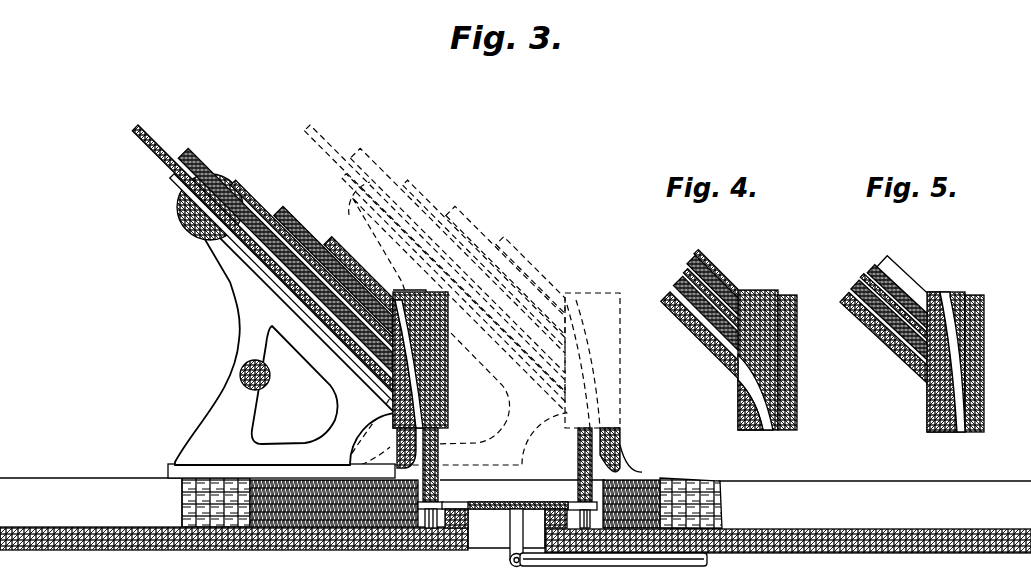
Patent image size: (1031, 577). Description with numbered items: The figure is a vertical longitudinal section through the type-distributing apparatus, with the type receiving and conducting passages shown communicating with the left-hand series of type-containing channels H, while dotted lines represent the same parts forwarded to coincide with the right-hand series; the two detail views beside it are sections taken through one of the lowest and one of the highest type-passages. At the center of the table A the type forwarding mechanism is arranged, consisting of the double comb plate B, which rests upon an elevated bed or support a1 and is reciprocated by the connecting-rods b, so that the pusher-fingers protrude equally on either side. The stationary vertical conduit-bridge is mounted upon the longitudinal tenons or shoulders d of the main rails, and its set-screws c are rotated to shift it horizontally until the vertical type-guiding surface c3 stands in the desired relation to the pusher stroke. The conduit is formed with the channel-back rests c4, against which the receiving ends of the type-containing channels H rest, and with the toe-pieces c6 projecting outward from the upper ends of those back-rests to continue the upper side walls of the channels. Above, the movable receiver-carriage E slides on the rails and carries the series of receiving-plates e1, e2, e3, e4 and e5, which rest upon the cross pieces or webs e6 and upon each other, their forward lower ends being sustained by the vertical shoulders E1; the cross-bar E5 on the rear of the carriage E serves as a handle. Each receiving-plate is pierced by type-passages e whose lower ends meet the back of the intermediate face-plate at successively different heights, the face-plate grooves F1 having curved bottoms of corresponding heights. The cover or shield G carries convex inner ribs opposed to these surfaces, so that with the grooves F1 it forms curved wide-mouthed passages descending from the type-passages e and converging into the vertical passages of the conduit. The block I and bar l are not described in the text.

In FIG. 3, the type-passages e is at (325, 337).
In FIG. 5, the type-passages e is at (883, 338).
In FIG. 3, the first or lower receiving-plate e1 is at (262, 253).
In FIG. 4, the first or lower receiving-plate e1 is at (699, 340).
In FIG. 3, the second receiving-plate e2 is at (285, 258).
In FIG. 4, the second receiving-plate e2 is at (675, 286).
In FIG. 5, the second receiving-plate e2 is at (855, 286).
In FIG. 3, the receiving-plate e3 is at (312, 262).
In FIG. 4, the receiving-plate e3 is at (684, 277).
In FIG. 5, the receiving-plate e3 is at (863, 276).
In FIG. 3, the receiving-plate e4 is at (333, 269).
In FIG. 4, the receiving-plate e4 is at (693, 262).
In FIG. 5, the receiving-plate e4 is at (877, 265).
In FIG. 3, the receiving-plate e5 is at (358, 271).
In FIG. 4, the receiving-plate e5 is at (716, 274).
In FIG. 5, the receiving-plate e5 is at (902, 285).
In FIG. 3, the cross pieces or webs e6 is at (208, 226).
In FIG. 3, the receiver-carriage E is at (281, 337).
In FIG. 3, the vertical shoulders E1 is at (399, 285).
In FIG. 3, the cross-bar E5 is at (240, 376).
In FIG. 3, the cover or shield G is at (424, 359).
In FIG. 4, the cover or shield G is at (775, 360).
In FIG. 5, the cover or shield G is at (963, 362).
In FIG. 3, the grooves of the face-plate F1 is at (408, 384).
In FIG. 4, the grooves of the face-plate F1 is at (755, 392).
In FIG. 5, the grooves of the face-plate F1 is at (946, 362).
In FIG. 3, the longitudinal tenons or shoulders d is at (506, 478).
In FIG. 3, the set-screws c is at (606, 450).
In FIG. 3, the vertical type-guiding surface c3 is at (440, 470).
In FIG. 3, the channel-back rests or stops c4 is at (411, 530).
In FIG. 3, the lateral projections or toe-pieces c6 is at (636, 469).
In FIG. 3, the double comb plate B is at (505, 497).
In FIG. 3, the connecting-rods b is at (503, 511).
In FIG. 3, the elevated bed or support a1 is at (506, 519).
In FIG. 3, the table A is at (203, 550).
In FIG. 3, the type-containing channels H is at (515, 503).
In FIG. 3, the block I is at (452, 503).
In FIG. 3, the lever bar l is at (613, 565).